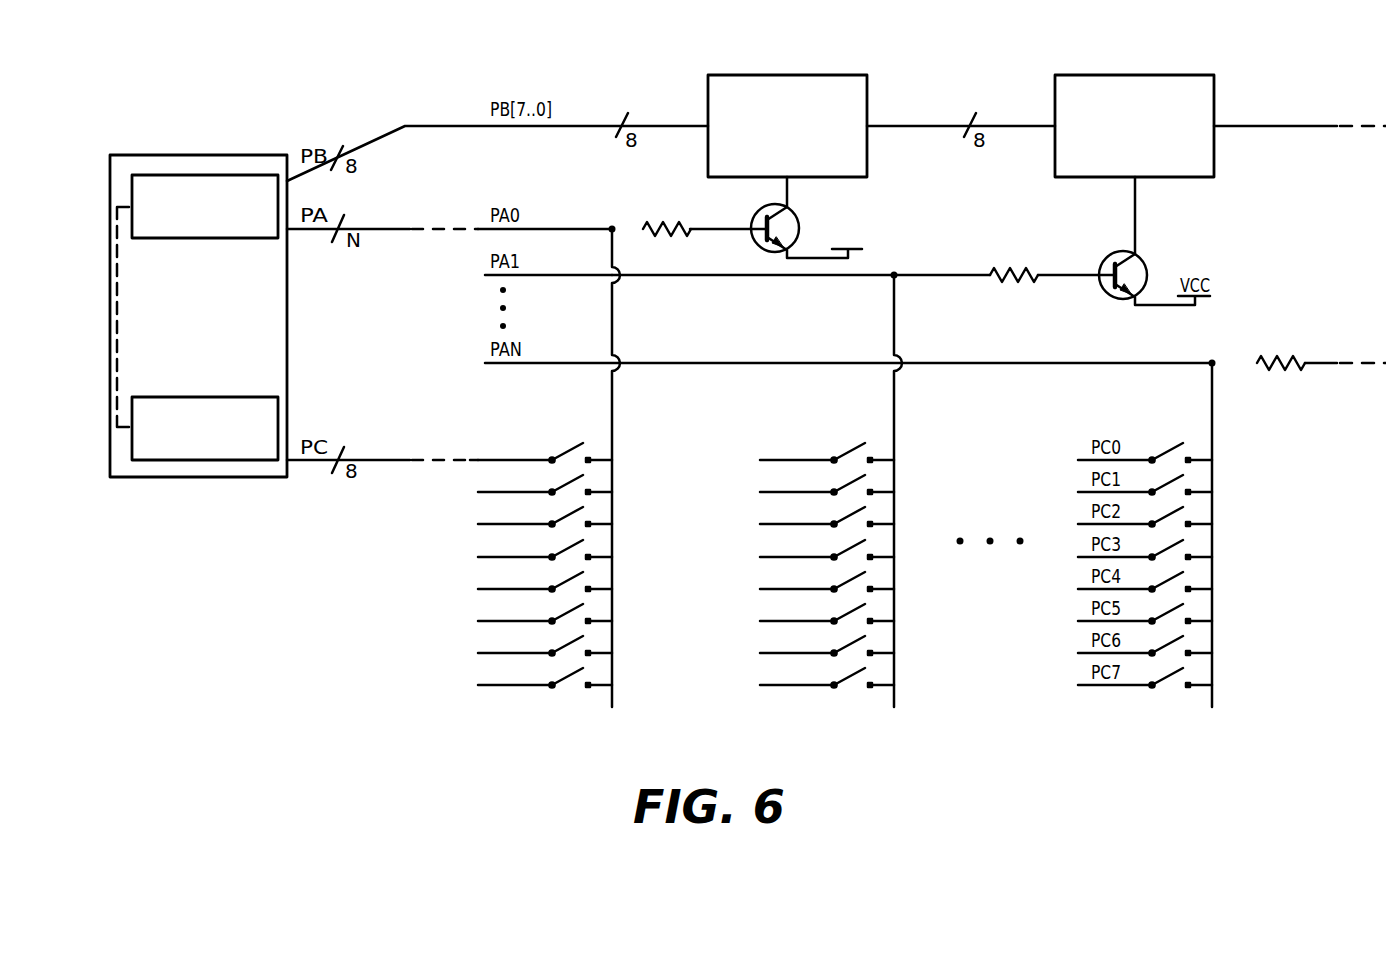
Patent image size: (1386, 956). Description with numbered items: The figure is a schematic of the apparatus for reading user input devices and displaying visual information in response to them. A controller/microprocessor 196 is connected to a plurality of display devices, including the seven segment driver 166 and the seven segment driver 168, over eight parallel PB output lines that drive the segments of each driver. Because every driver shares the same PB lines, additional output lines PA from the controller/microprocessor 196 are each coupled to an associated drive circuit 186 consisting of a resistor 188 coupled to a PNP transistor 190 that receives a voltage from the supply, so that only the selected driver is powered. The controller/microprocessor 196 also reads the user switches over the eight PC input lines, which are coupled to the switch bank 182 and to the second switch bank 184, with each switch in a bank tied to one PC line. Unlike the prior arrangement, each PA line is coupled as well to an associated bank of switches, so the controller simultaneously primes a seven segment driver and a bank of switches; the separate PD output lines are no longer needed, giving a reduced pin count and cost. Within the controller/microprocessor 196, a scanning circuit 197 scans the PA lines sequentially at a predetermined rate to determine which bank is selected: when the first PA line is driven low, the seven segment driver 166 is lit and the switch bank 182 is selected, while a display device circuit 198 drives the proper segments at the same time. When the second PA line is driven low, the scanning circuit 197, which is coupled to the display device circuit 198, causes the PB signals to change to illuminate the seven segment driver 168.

The seven segment driver 166 is at (827, 75).
The seven segment driver 168 is at (1158, 75).
The switch bank 182 is at (598, 459).
The second switch bank 184 is at (881, 459).
The drive circuit 186 is at (742, 215).
The resistor 188 is at (652, 225).
The PNP transistor 190 is at (794, 216).
The controller/microprocessor 196 is at (237, 155).
The scanning circuit 197 is at (188, 461).
The display device circuit 198 is at (150, 175).